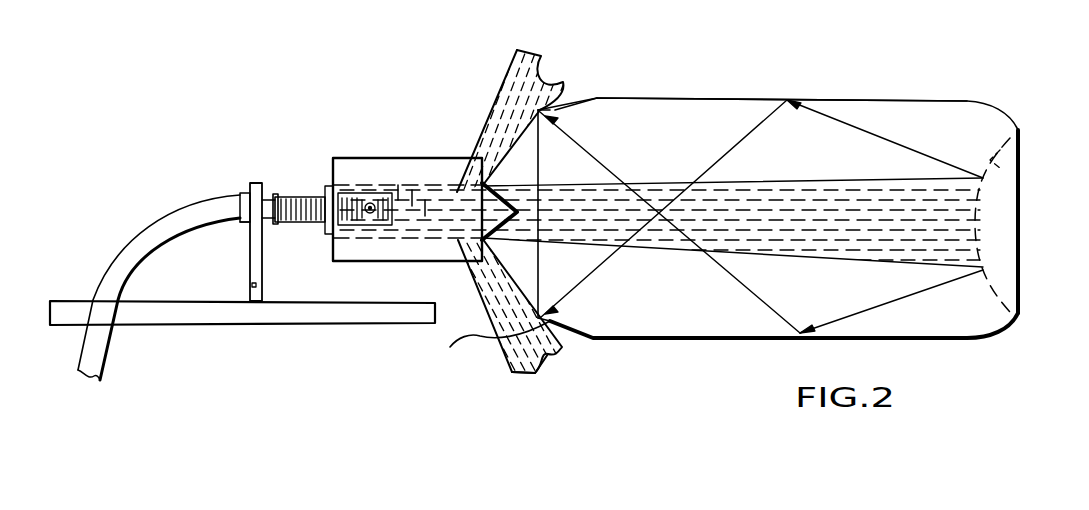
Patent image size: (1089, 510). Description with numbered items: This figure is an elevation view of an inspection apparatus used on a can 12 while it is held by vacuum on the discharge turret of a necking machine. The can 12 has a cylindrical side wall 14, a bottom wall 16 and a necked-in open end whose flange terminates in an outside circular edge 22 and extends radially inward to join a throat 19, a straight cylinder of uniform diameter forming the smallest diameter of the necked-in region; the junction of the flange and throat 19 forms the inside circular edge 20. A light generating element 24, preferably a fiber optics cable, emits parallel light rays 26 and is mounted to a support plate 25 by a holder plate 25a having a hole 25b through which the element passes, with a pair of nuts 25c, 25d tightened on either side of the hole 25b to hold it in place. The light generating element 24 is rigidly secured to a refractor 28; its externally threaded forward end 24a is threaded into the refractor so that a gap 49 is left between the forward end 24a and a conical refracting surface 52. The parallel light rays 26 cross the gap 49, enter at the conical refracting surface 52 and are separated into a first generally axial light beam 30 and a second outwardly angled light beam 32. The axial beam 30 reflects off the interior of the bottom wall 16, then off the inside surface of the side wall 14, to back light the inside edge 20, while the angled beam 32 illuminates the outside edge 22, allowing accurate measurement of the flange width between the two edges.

The can 12 is at (877, 98).
The cylindrical side wall 14 is at (710, 98).
The bottom wall 16 is at (1018, 160).
The throat 19 is at (563, 110).
The inside circular edge 20 is at (548, 115).
The outside circular edge 22 is at (551, 68).
The light generating element 24 is at (130, 240).
The externally threaded forward end 24a is at (285, 197).
The support plate 25 is at (287, 307).
The holder plate 25a is at (257, 257).
The hole 25b is at (240, 222).
The nut 25c is at (273, 218).
The nut 25d is at (243, 197).
The parallel light rays 26 is at (425, 215).
The refractor 28 is at (365, 178).
The first generally axial light beam 30 is at (648, 250).
The second outwardly angled light beam 32 is at (507, 362).
The gap 49 is at (403, 217).
The conical refracting surface 52 is at (455, 195).